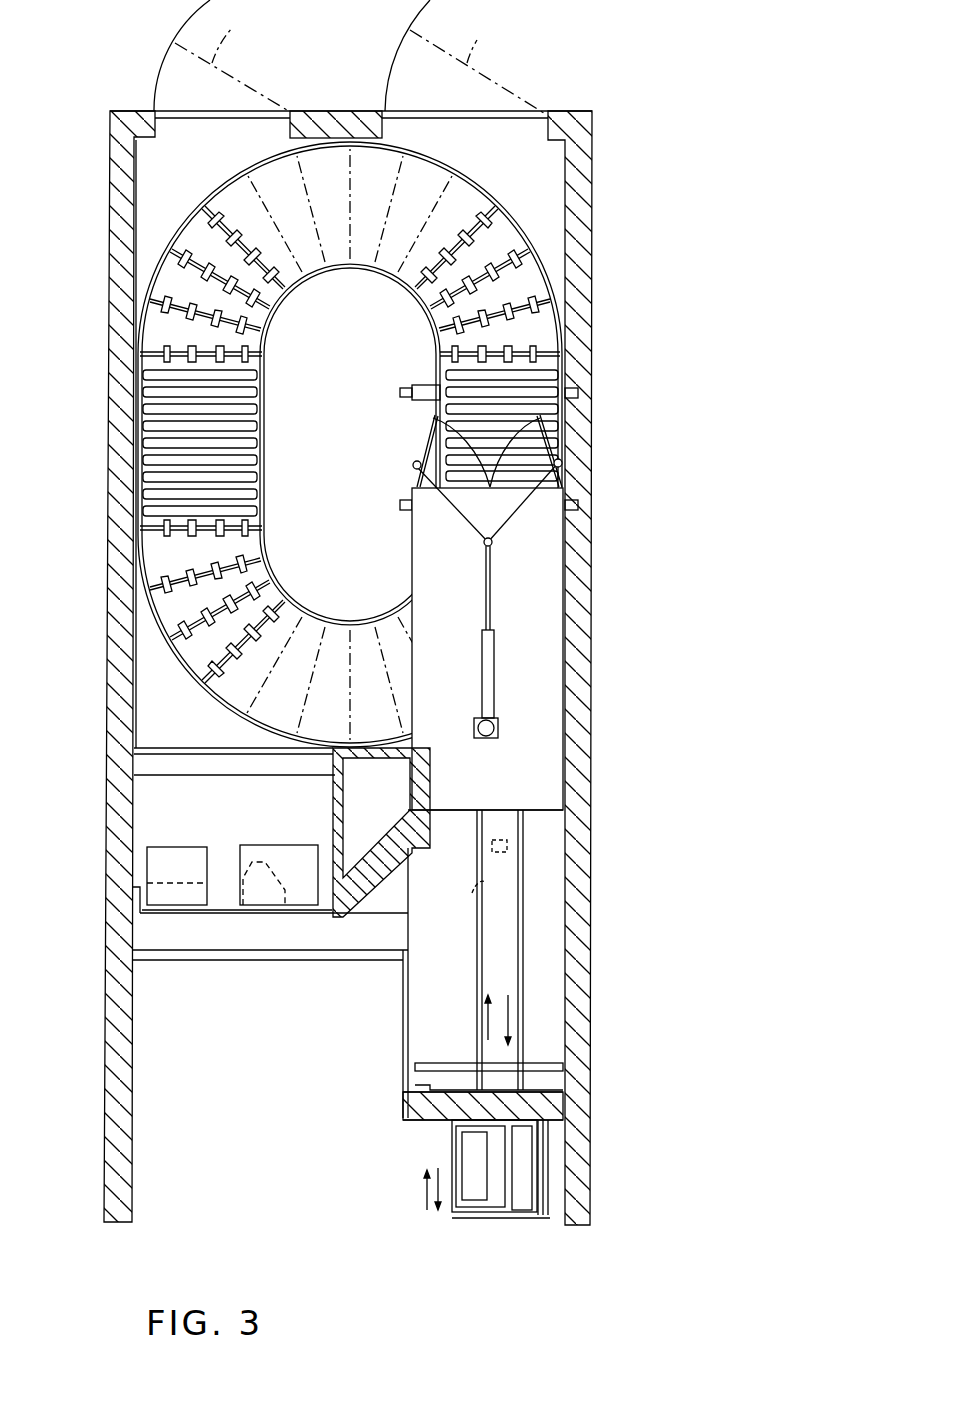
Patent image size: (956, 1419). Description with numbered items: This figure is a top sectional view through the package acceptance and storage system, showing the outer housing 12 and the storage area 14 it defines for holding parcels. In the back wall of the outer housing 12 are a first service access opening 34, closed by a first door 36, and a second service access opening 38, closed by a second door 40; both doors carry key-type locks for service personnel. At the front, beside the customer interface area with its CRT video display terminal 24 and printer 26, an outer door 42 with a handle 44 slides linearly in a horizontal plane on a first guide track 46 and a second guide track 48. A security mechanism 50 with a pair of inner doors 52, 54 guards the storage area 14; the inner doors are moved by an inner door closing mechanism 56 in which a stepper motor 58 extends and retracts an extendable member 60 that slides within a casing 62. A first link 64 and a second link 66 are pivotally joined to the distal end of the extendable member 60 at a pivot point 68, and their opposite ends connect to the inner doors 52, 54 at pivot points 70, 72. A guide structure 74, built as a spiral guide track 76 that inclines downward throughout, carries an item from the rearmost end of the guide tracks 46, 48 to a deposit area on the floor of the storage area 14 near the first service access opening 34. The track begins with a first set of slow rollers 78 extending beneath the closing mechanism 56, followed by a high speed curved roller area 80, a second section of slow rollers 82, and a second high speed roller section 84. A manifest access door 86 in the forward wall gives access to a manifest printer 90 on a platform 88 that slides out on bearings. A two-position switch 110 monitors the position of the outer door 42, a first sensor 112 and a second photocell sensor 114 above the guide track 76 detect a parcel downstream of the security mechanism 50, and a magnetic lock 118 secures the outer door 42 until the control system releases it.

The outer housing 12 is at (104, 412).
The storage area 14 is at (512, 162).
The CRT video display terminal 24 is at (232, 887).
The printer 26 is at (147, 880).
The first service access opening 34 is at (509, 69).
The first door 36 is at (479, 28).
The second service access opening 38 is at (247, 70).
The second door 40 is at (236, 24).
The outer door 42 is at (530, 1062).
The handle 44 is at (415, 1068).
The first guide track 46 is at (476, 973).
The second guide track 48 is at (523, 972).
The security mechanism 50 is at (510, 417).
The first inner door 52 is at (430, 420).
The second inner door 54 is at (561, 424).
The inner door closing mechanism 56 is at (510, 622).
The stepper motor 58 is at (490, 738).
The extendable member 60 is at (486, 585).
The casing 62 is at (482, 672).
The first link 64 is at (462, 522).
The second link 66 is at (511, 520).
The pivot point 68 is at (491, 545).
The pivot point 70 is at (413, 465).
The pivot point 72 is at (563, 454).
The guide structure 74 is at (540, 222).
The spiral guide track 76 is at (547, 262).
The first set of slow rollers 78 is at (562, 367).
The high speed curved roller area 80 is at (283, 296).
The second section of slow rollers 82 is at (250, 383).
The second high speed roller section 84 is at (263, 530).
The manifest access door 86 is at (547, 1213).
The platform 88 is at (480, 1213).
The manifest printer 90 is at (468, 1210).
The two-position switch 110 is at (474, 888).
The first sensor 112 is at (580, 505).
The second photocell sensor 114 is at (405, 392).
The magnetic lock 118 is at (492, 850).